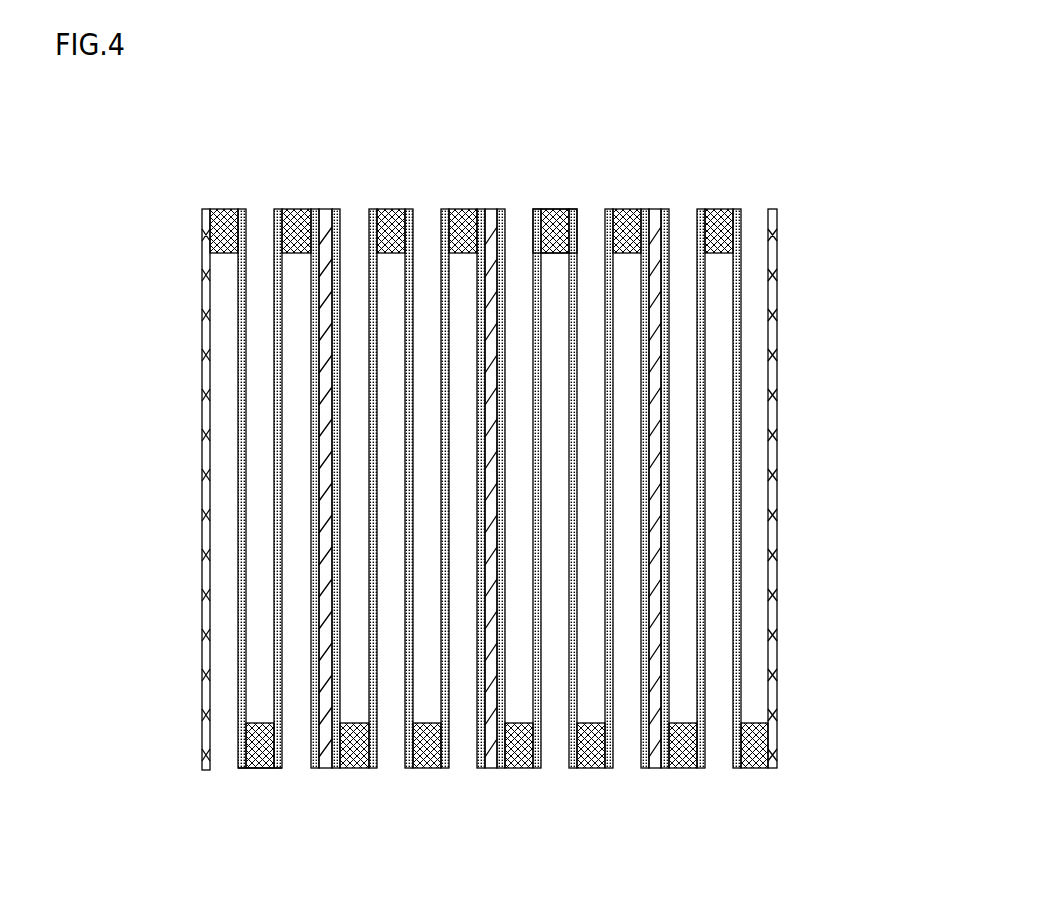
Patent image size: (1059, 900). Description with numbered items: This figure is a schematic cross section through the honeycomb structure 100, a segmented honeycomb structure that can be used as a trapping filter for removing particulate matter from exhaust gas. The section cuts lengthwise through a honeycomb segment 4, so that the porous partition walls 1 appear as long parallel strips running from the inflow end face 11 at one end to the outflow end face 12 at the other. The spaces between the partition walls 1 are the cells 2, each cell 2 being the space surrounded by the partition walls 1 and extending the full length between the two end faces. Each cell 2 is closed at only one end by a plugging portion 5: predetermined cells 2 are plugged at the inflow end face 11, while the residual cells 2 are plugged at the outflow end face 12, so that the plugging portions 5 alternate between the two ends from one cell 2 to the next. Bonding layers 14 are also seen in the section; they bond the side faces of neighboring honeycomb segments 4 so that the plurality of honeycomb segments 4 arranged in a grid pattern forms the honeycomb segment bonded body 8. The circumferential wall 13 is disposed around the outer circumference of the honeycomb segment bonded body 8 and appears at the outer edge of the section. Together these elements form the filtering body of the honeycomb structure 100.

The honeycomb structure 100 is at (535, 475).
The partition wall 1 is at (595, 444).
The cell 2 is at (555, 189).
The honeycomb segment 4 is at (668, 456).
The plugging portion 5 is at (489, 483).
The honeycomb segment bonded body 8 is at (770, 451).
The inflow end face 11 is at (233, 442).
The outflow end face 12 is at (251, 818).
The circumferential wall 13 is at (818, 488).
The bonding layer 14 is at (490, 445).